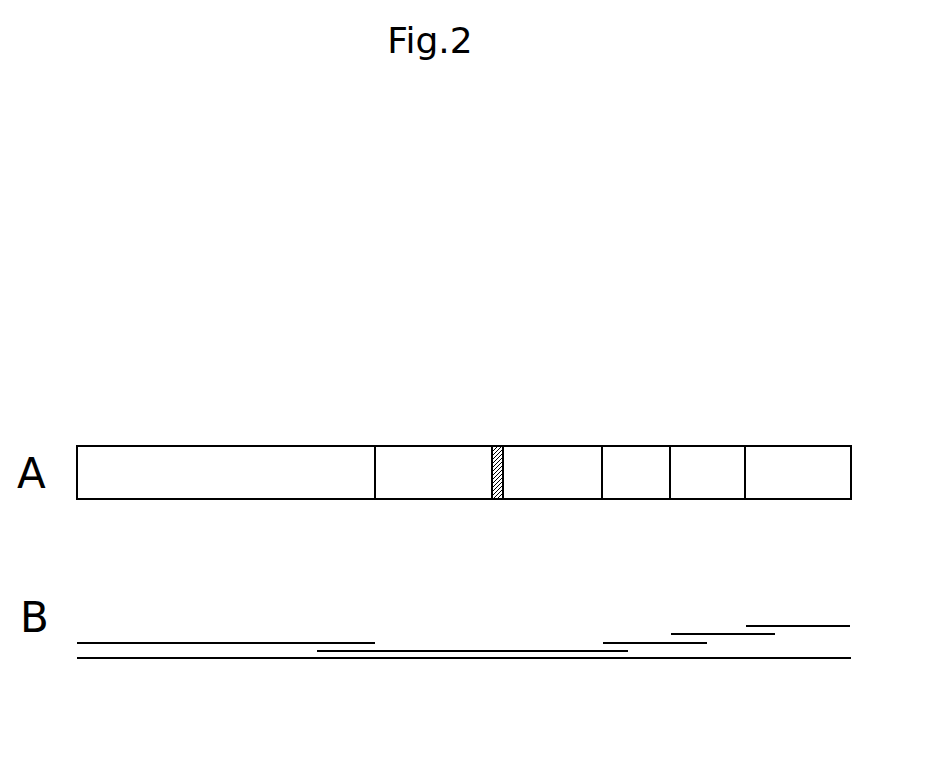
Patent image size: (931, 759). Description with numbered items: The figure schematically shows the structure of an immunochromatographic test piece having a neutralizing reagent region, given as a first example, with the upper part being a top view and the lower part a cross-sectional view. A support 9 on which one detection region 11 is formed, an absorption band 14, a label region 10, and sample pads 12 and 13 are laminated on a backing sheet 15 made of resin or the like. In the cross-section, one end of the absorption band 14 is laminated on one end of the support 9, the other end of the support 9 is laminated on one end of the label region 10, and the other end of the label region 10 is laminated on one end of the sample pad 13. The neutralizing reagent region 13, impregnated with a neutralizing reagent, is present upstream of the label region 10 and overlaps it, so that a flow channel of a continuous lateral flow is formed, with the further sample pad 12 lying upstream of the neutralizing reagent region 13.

The support 9 is at (433, 492).
The label region 10 is at (637, 492).
The detection region 11 is at (497, 492).
The sample pad 12 is at (797, 492).
The neutralizing reagent region 13 is at (708, 492).
The absorption band 14 is at (223, 492).
The backing sheet 15 is at (779, 659).